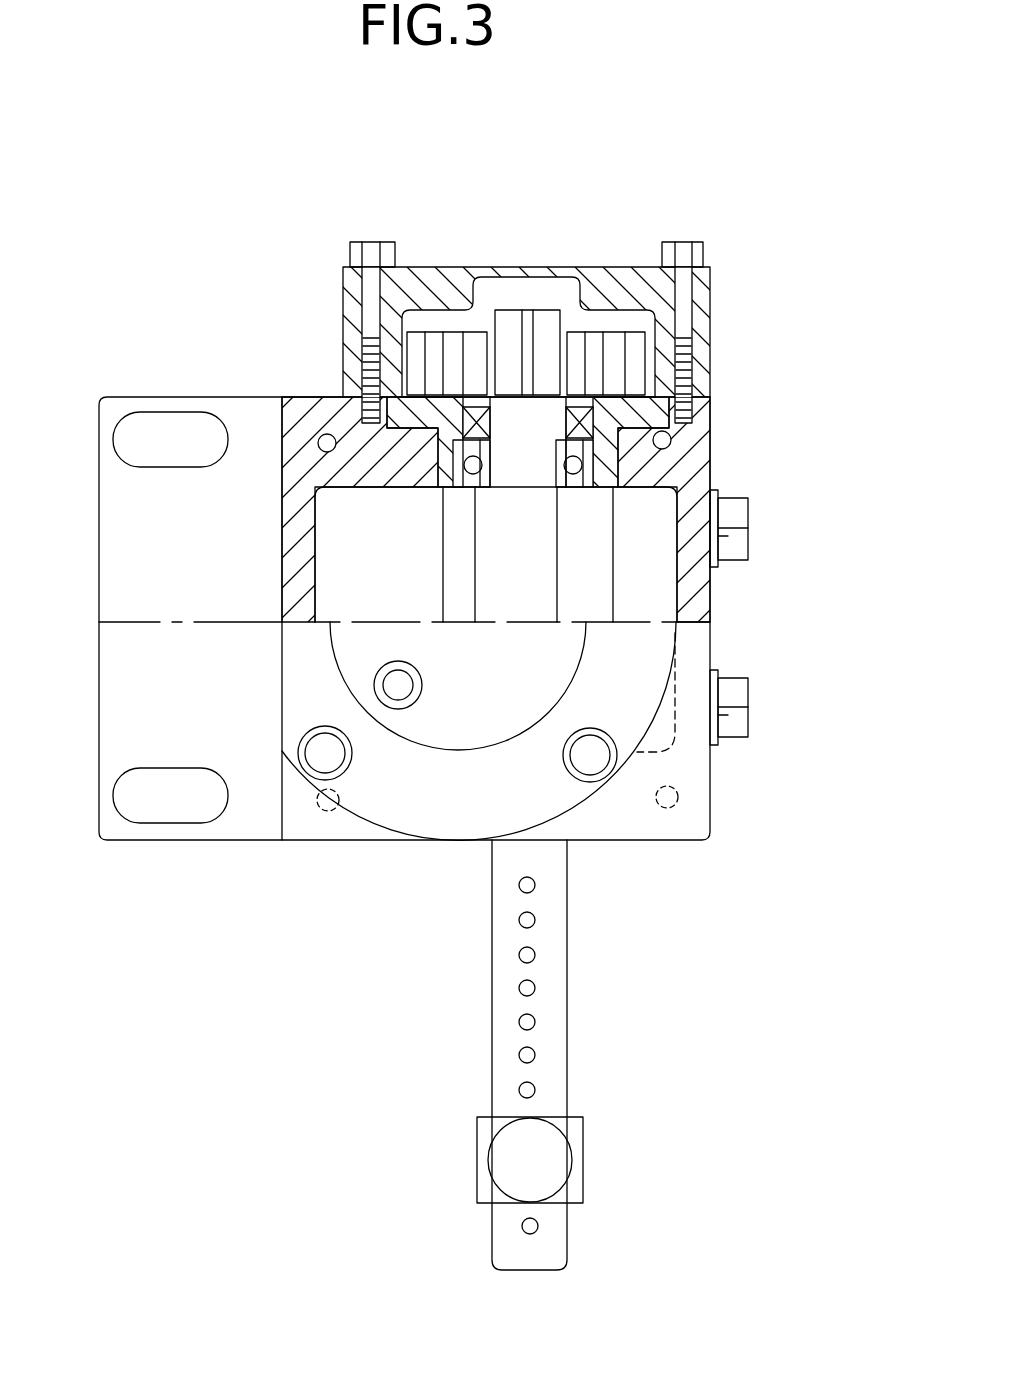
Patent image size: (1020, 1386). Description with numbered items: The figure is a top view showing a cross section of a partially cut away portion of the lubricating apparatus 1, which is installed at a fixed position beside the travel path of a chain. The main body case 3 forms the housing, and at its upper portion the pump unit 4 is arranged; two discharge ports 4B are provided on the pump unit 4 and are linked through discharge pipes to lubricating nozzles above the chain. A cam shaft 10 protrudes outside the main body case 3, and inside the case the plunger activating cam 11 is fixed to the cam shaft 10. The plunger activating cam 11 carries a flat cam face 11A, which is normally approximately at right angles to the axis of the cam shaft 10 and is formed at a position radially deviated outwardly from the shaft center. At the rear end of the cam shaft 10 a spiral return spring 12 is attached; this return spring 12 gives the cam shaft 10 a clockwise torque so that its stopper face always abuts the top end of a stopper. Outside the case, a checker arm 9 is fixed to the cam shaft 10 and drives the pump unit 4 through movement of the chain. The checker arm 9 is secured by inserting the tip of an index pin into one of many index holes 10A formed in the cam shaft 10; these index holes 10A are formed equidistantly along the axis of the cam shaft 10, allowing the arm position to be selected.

The lubricating apparatus 1 is at (716, 780).
The main body case 3 is at (694, 653).
The pump unit 4 is at (387, 807).
The discharge port 4B is at (423, 675).
The checker arm 9 is at (586, 1142).
The cam shaft 10 is at (555, 915).
The index hole 10A is at (535, 993).
The plunger activating cam 11 is at (537, 525).
The flat cam face 11A is at (455, 563).
The return spring 12 is at (597, 330).